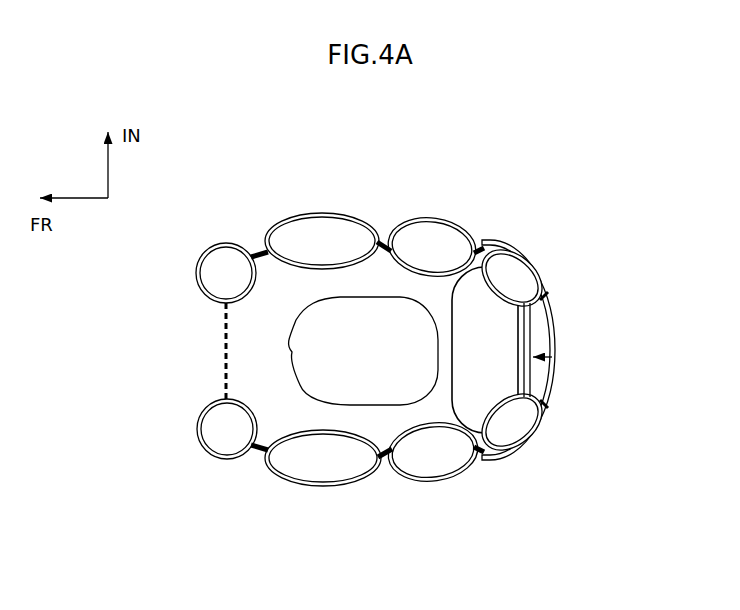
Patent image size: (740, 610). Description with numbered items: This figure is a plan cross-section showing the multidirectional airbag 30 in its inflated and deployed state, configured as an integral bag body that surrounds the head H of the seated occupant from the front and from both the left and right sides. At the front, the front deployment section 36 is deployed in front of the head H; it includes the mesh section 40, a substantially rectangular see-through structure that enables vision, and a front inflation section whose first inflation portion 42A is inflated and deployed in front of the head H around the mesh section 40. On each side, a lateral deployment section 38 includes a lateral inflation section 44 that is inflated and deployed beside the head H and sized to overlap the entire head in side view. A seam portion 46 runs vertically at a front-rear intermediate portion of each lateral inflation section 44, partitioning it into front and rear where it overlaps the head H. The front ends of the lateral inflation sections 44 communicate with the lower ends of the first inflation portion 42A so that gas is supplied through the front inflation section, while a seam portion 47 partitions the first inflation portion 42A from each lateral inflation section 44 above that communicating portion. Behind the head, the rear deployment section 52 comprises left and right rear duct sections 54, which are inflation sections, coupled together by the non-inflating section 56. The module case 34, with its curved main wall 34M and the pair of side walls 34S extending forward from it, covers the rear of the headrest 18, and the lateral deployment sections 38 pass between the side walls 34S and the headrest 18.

The headrest 18 is at (458, 397).
The multidirectional airbag 30 is at (449, 205).
The module case 34 is at (553, 333).
The side walls 34S is at (500, 238).
The main wall 34M is at (553, 377).
The front deployment section 36 is at (208, 367).
The lateral deployment sections 38 is at (407, 187).
The mesh section 40 is at (224, 343).
The first inflation portion 42A is at (221, 260).
The lateral inflation sections 44 is at (422, 232).
The seam portion 46 is at (384, 252).
The seam portion 47 is at (258, 262).
The rear deployment section 52 is at (553, 357).
The rear duct sections 54 is at (553, 302).
The non-inflating section 56 is at (553, 385).
The head H is at (322, 360).